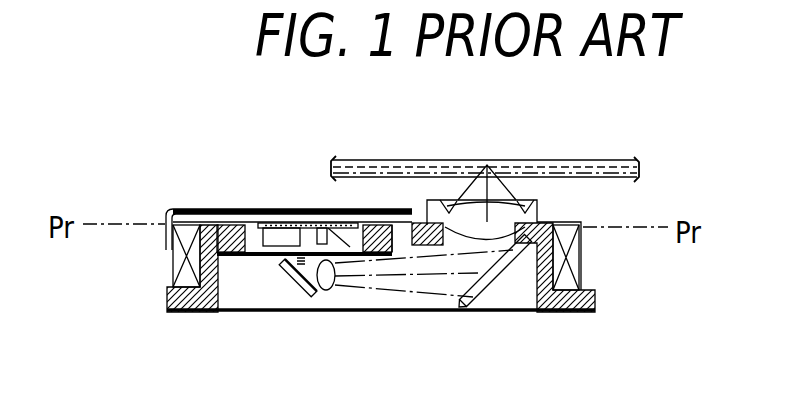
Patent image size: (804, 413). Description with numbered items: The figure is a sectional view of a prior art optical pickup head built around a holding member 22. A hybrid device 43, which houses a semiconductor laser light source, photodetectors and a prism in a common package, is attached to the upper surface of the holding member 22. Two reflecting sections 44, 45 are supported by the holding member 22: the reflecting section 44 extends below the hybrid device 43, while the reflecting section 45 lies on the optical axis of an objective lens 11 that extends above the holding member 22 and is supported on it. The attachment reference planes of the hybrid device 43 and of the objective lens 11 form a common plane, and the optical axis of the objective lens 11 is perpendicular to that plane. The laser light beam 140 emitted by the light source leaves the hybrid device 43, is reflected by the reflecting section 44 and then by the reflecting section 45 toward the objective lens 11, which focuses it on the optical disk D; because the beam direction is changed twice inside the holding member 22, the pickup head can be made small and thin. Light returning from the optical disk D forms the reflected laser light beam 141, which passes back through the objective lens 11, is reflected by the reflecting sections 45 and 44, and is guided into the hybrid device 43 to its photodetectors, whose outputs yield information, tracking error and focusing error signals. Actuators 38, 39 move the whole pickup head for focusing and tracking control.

The objective lens 11 is at (464, 218).
The reflected laser light beam 141 is at (503, 198).
The optical disk D is at (574, 160).
The holding member 22 is at (558, 312).
The actuator 38 is at (172, 270).
The actuator 39 is at (576, 258).
The hybrid device 43 is at (357, 256).
The reflecting section 44 is at (306, 297).
The laser light beam 140 is at (337, 291).
The reflecting section 45 is at (470, 292).